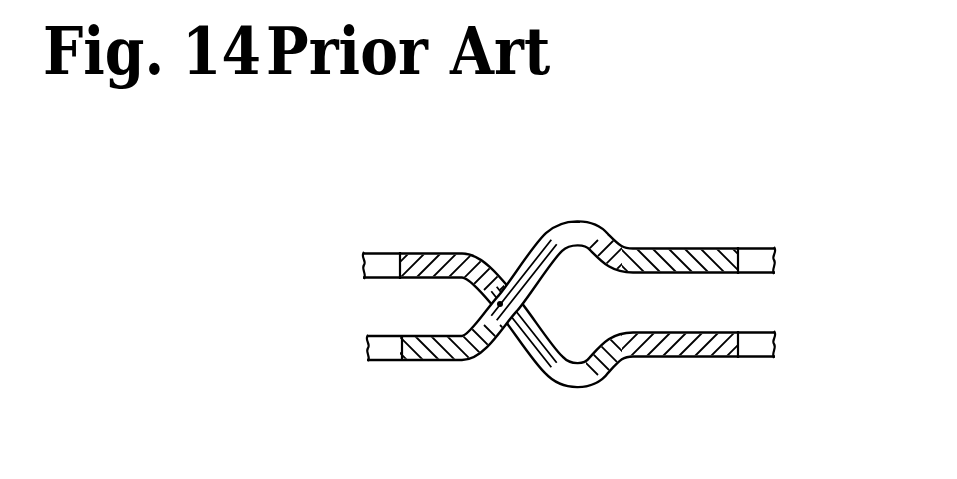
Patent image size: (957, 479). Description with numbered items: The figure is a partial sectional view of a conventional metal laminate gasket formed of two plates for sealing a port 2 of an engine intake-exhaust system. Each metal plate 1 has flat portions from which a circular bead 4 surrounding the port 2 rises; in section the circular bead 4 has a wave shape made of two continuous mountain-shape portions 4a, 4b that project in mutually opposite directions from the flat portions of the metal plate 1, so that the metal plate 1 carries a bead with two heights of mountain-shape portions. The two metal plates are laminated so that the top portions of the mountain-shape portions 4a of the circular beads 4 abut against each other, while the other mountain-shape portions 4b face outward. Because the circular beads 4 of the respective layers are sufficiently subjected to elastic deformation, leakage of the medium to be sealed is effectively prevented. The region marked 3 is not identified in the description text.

The metal plate 1 is at (702, 247).
The port 2 is at (388, 254).
The second end portion 3 is at (750, 248).
The circular bead 4 is at (533, 370).
The mountain-shape portion 4a is at (517, 300).
The mountain-shape portion 4b is at (594, 222).